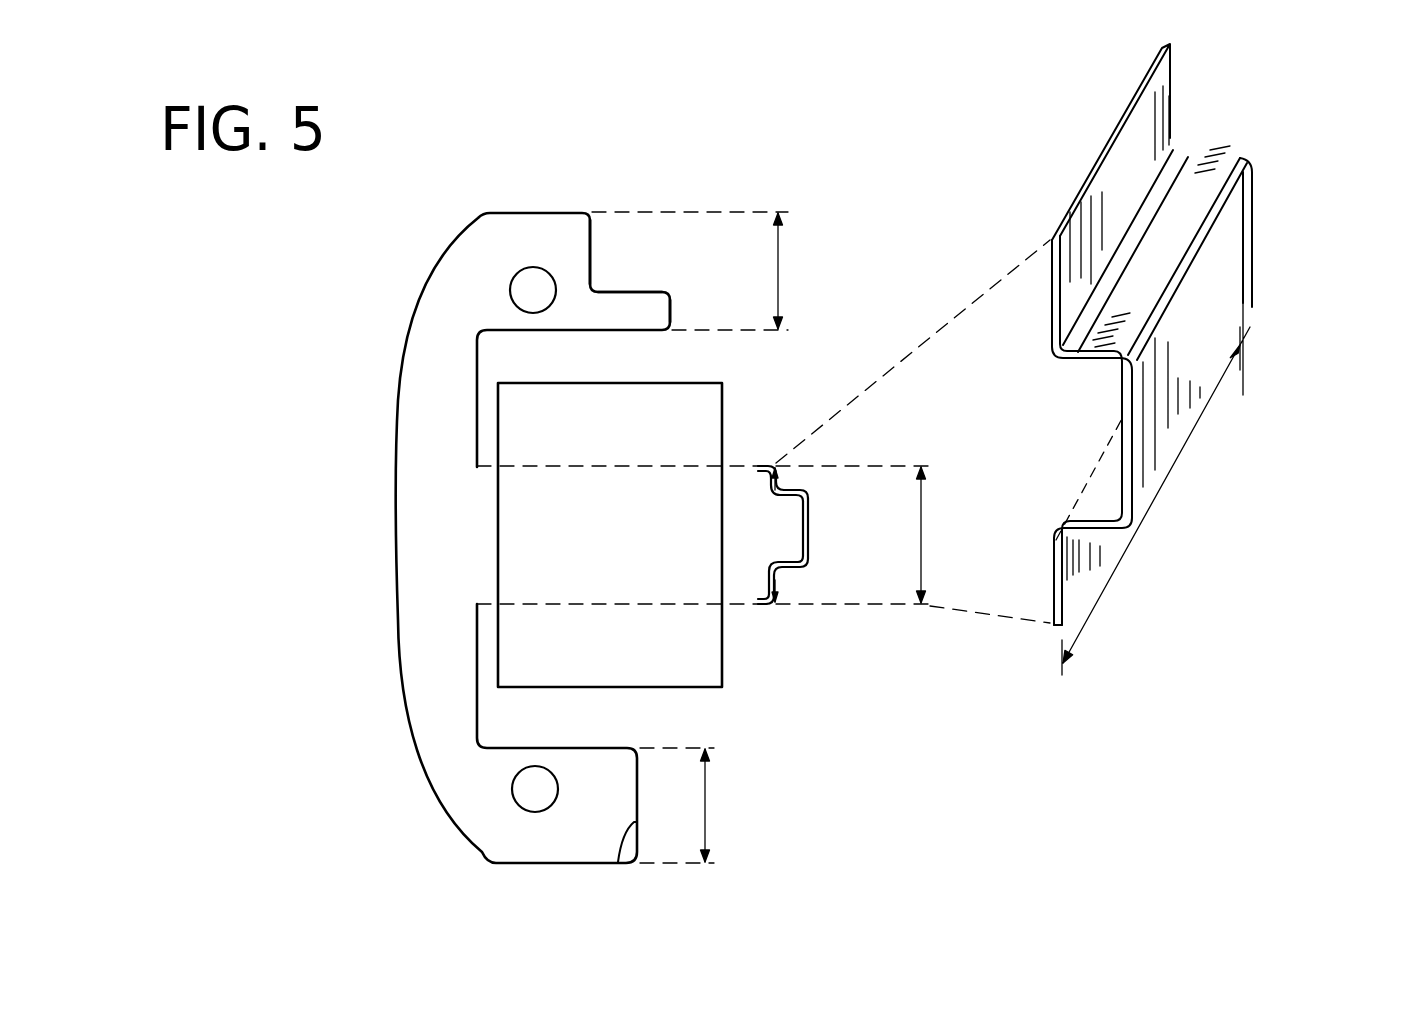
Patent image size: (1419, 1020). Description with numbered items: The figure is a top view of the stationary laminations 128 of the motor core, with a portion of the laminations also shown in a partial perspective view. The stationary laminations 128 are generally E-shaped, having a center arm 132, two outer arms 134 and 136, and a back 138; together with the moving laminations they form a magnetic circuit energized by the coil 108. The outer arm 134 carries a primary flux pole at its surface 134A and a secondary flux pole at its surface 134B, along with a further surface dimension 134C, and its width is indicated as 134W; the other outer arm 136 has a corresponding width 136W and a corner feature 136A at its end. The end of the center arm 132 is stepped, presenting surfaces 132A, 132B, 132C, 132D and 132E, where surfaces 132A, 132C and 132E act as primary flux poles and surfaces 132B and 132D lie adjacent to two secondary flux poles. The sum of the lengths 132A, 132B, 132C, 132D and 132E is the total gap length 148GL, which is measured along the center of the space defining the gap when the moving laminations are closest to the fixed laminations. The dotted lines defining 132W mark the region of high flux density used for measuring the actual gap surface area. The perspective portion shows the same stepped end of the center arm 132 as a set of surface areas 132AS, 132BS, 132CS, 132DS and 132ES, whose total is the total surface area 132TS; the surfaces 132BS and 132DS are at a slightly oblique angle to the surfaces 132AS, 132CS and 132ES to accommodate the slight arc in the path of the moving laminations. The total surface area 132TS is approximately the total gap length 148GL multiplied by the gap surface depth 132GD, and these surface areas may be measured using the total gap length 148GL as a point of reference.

The coil 108 is at (505, 656).
The stationary laminations 128 is at (399, 585).
The center arm 132 is at (542, 517).
The surface (primary flux pole) / length 132A is at (764, 588).
The surface (secondary flux pole) / length 132B is at (772, 566).
The surface (primary flux pole) / length 132C is at (800, 535).
The surface (secondary flux pole) / length 132D is at (797, 506).
The surface (primary flux pole) / length 132E is at (762, 477).
The total surface area 132TS is at (815, 565).
The width of center arm (flux region width) 132W is at (921, 533).
The surface area 132ES is at (1152, 117).
The surface area 132DS is at (1197, 157).
The surface area 132CS is at (1237, 222).
The surface area 132BS is at (1107, 493).
The surface area 132AS is at (1083, 577).
The gap surface depth 132GD is at (1160, 497).
The outer arm 134 is at (485, 254).
The surface (primary flux pole) 134A is at (727, 283).
The surface (secondary flux pole) 134B is at (622, 283).
The surface dimension 134C is at (598, 248).
The width of outer arm 134W is at (778, 263).
The outer arm 136 is at (490, 821).
The lower tab corner feature 136A is at (620, 850).
The width of outer arm 136W is at (706, 795).
The back 138 is at (420, 646).
The total gap length 148GL is at (810, 543).